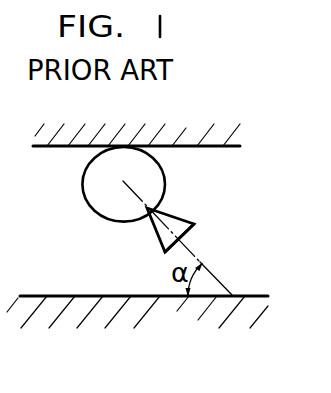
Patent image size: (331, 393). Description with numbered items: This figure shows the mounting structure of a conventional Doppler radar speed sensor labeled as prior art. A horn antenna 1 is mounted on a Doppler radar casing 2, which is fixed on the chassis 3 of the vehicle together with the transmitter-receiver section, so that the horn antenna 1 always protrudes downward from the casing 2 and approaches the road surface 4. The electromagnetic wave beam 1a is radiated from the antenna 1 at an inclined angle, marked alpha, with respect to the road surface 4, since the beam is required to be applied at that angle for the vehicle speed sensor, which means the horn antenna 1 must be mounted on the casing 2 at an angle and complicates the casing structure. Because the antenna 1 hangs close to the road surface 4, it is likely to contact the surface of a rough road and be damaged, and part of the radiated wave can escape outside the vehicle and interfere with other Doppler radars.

The horn antenna 1 is at (169, 212).
The electromagnetic wave beam 1a is at (201, 215).
The Doppler radar casing 2 is at (93, 208).
The chassis 3 is at (188, 135).
The road surface 4 is at (165, 305).